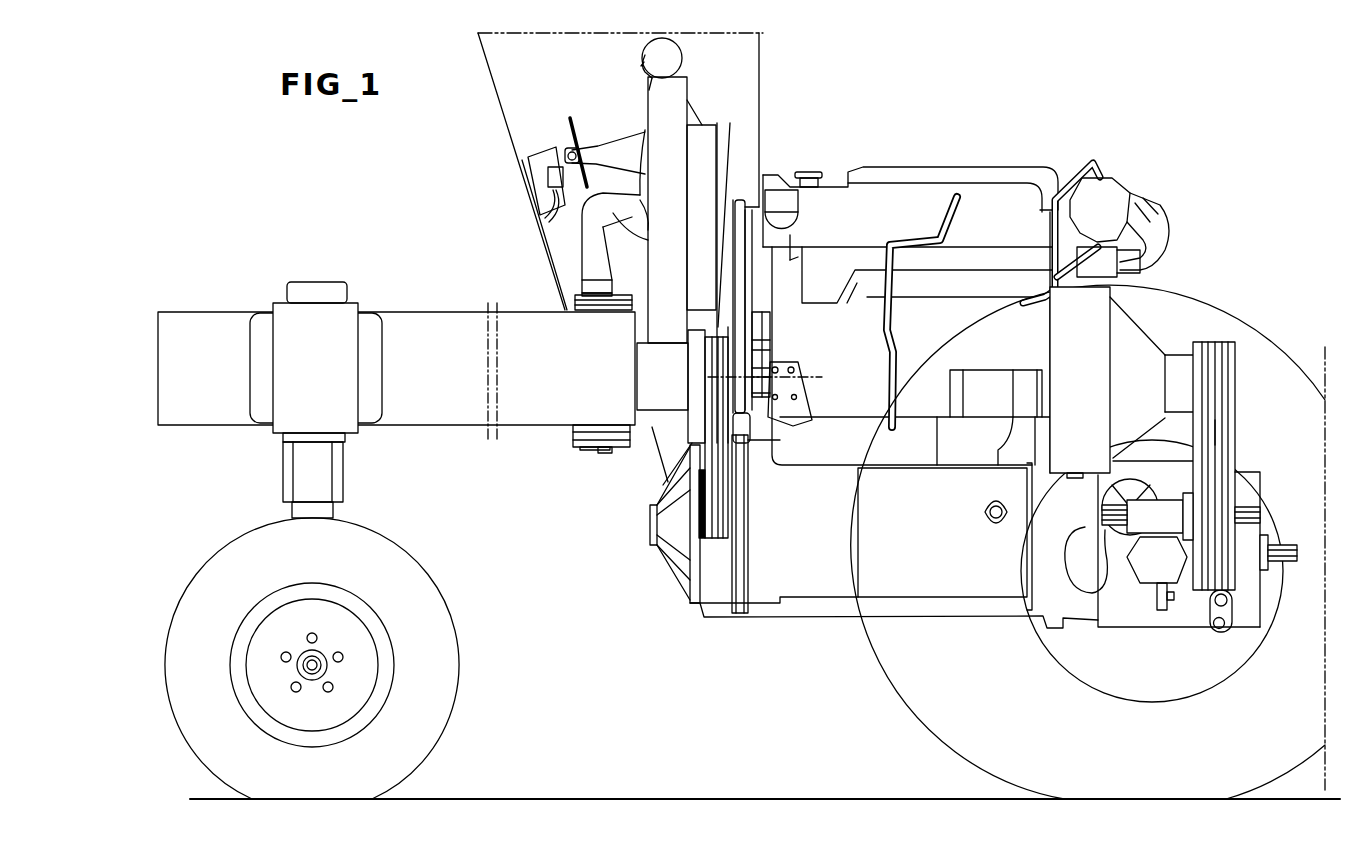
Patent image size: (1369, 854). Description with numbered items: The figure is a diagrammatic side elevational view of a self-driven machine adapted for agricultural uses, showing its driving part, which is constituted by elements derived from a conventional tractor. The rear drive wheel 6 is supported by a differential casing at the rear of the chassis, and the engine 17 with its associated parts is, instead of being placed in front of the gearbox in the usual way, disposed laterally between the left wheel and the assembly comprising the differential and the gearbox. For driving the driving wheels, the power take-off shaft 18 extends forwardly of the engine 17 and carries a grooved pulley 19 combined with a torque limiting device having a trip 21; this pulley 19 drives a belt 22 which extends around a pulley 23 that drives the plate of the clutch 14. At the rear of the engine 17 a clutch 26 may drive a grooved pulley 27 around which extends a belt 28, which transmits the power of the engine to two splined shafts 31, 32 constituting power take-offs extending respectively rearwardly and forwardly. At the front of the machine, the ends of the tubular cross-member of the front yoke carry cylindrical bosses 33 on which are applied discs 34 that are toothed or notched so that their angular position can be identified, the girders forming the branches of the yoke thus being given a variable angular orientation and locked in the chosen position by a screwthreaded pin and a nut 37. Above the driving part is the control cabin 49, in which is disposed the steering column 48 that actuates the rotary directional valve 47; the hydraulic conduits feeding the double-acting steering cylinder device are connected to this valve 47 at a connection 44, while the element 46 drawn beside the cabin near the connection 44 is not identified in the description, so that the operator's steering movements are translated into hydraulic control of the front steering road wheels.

The rear drive wheel 6 is at (1200, 300).
The clutch 14 is at (805, 590).
The engine 17 is at (966, 318).
The power take-off shaft 18 is at (785, 365).
The grooved pulley 19 is at (702, 393).
The trip 21 is at (693, 358).
The belt 22 is at (712, 432).
The pulley 23 is at (735, 520).
The clutch 26 is at (1148, 346).
The grooved pulley 27 is at (1238, 378).
The belt 28 is at (1218, 432).
The splined shaft 31 is at (1262, 513).
The splined shaft 32 is at (1105, 512).
The cylindrical boss 33 is at (596, 311).
The disc 34 is at (626, 296).
The nut 37 is at (605, 453).
The connection 44 is at (546, 206).
The handrail 46 is at (548, 250).
The rotary directional valve 47 is at (548, 156).
The steering column 48 is at (584, 177).
The control cabin 49 is at (760, 76).